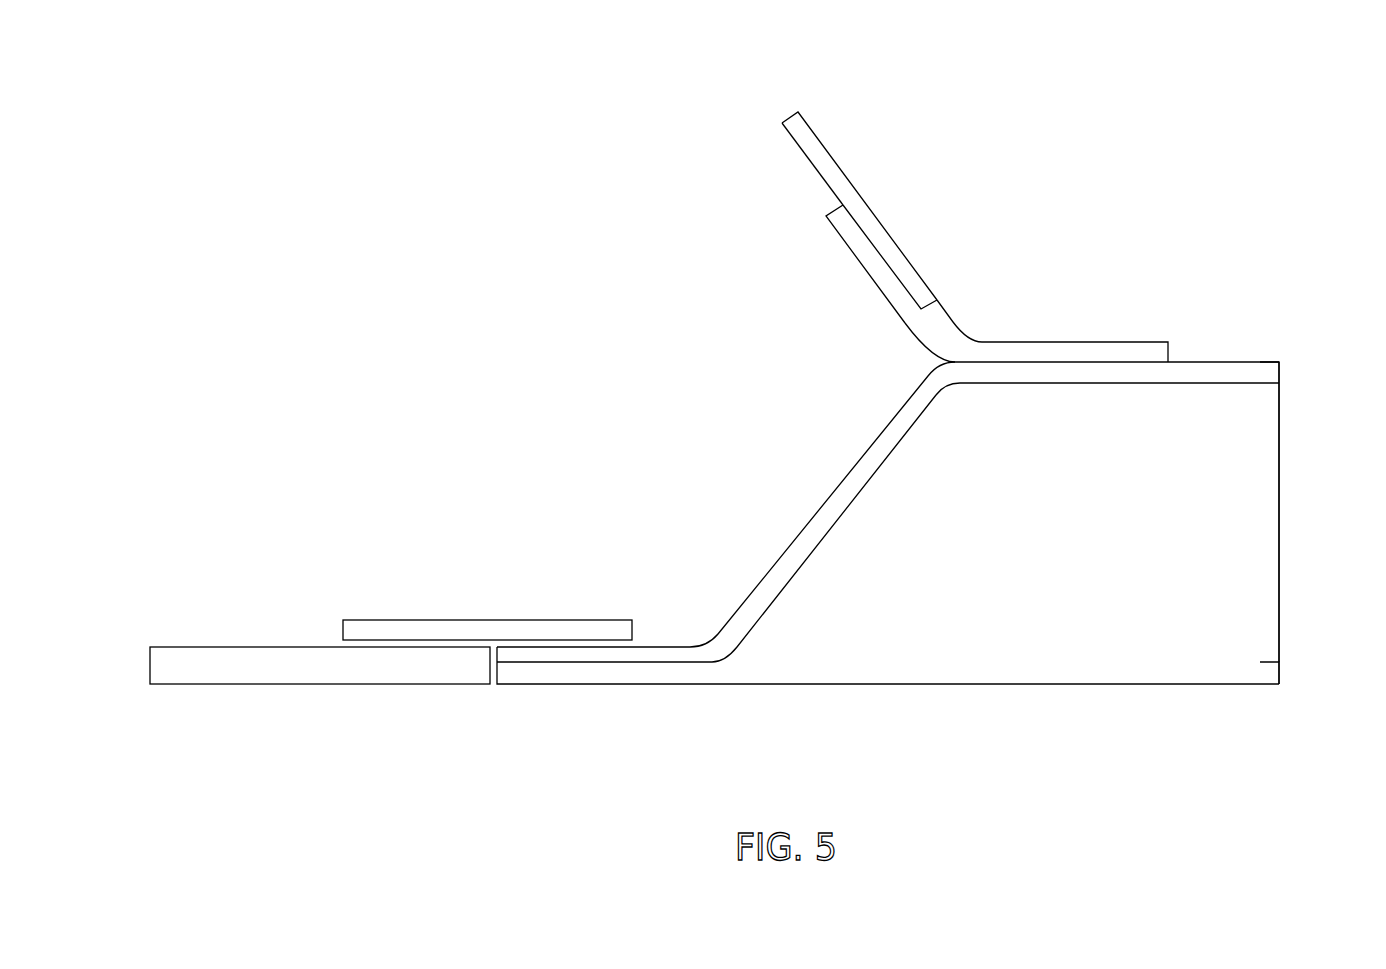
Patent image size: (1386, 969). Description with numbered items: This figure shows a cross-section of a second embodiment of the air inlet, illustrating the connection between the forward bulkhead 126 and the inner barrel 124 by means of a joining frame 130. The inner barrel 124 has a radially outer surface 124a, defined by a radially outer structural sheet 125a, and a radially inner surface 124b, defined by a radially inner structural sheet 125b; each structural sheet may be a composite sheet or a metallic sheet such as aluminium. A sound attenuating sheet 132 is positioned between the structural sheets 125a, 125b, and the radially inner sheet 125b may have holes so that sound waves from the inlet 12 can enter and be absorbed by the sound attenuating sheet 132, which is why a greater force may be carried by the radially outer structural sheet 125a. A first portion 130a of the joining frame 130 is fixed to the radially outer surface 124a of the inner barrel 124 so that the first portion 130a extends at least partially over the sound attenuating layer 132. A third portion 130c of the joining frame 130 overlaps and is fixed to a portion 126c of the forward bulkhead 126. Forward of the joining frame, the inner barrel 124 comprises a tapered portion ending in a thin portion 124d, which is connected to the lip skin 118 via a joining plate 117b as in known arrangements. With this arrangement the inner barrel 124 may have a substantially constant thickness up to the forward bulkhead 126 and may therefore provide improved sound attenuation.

The inlet 12 is at (417, 118).
The lip skin 118 is at (265, 685).
The joining plate 117b is at (482, 618).
The inner barrel 124 is at (1093, 708).
The radially outer surface 124a is at (1210, 370).
The radially inner surface 124b is at (1188, 672).
The thin portion 124d is at (592, 687).
The radially outer structural sheet 125a is at (1280, 373).
The radially inner structural sheet 125b is at (1270, 672).
The forward bulkhead 126 is at (828, 170).
The portion of the forward bulkhead 126c is at (908, 273).
The joining frame 130 is at (948, 345).
The first portion 130a is at (1078, 352).
The third portion 130c is at (867, 252).
The sound attenuating sheet 132 is at (1248, 468).